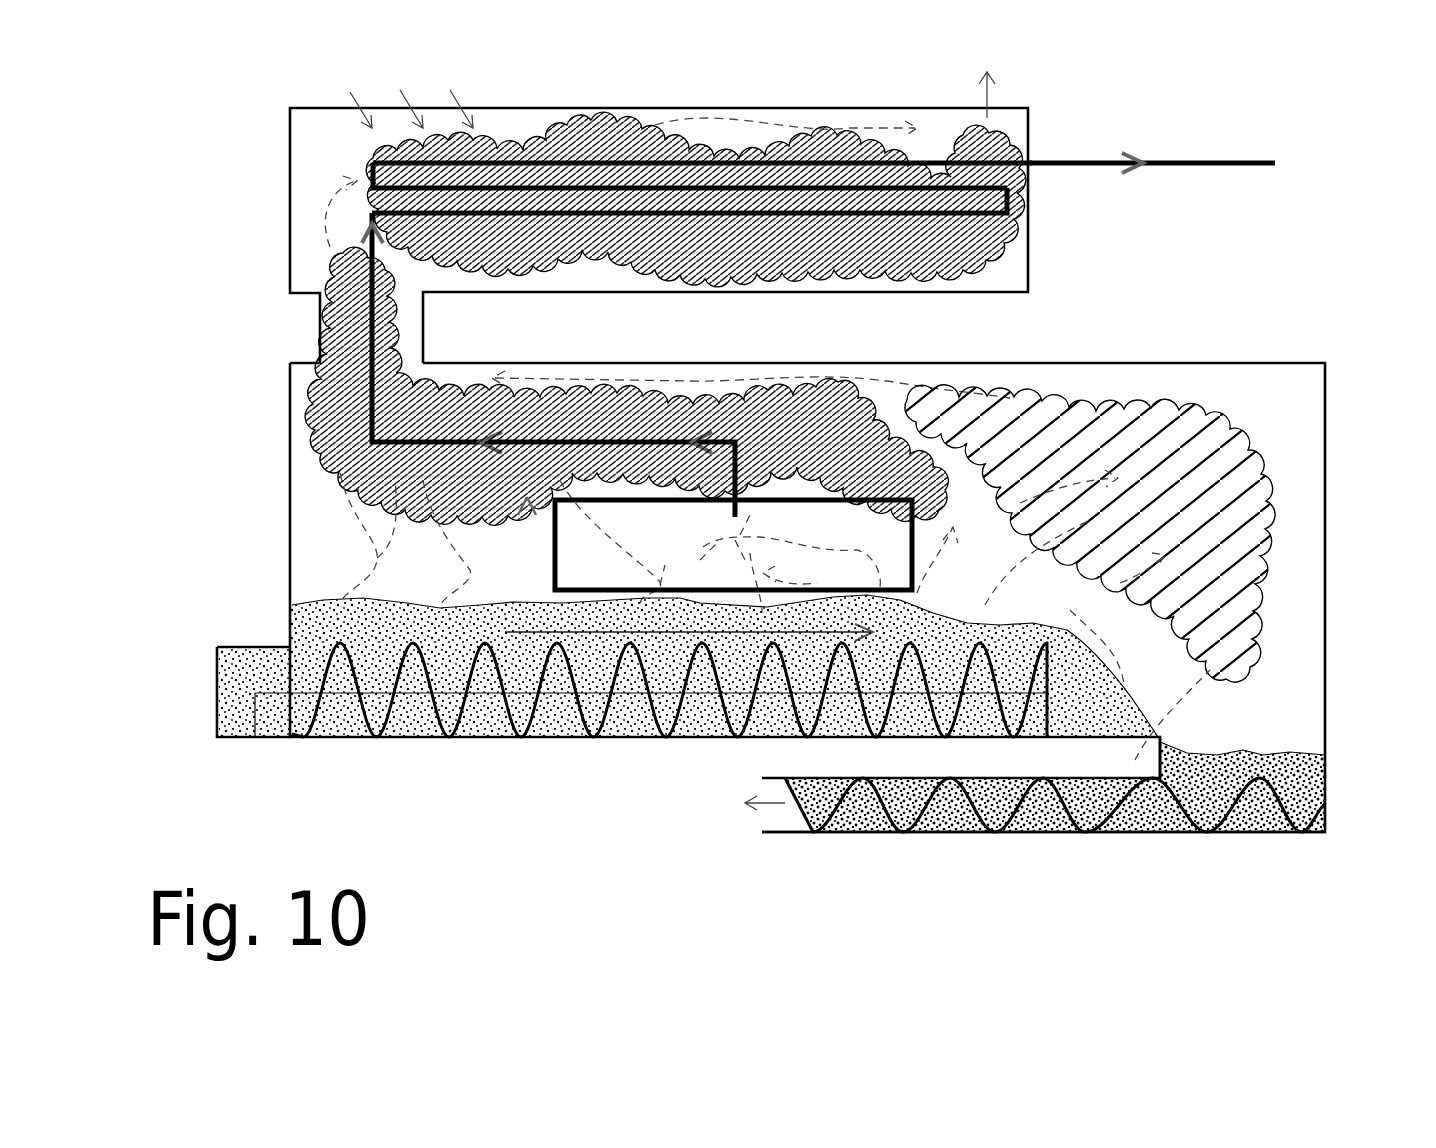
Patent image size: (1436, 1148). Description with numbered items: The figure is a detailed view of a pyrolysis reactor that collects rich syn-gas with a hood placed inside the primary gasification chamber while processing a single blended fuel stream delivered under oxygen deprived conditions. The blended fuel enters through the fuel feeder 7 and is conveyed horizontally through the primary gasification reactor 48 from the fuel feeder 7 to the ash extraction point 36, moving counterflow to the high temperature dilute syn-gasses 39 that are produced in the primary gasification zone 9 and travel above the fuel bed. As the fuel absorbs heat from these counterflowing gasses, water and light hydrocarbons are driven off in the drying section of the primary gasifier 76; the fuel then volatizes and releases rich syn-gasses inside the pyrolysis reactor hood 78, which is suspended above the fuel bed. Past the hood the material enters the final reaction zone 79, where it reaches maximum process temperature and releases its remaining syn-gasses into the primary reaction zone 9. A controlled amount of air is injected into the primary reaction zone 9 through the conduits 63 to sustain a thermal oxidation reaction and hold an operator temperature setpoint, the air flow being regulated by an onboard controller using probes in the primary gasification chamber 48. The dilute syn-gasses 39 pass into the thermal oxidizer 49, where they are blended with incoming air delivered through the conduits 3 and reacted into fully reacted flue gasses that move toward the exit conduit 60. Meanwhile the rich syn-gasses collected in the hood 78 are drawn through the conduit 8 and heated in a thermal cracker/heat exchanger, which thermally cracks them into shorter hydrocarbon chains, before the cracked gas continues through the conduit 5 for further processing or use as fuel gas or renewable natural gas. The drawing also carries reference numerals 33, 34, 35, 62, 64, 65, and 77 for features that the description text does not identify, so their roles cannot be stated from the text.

The conduits 3 is at (407, 83).
The conduit 5 is at (1212, 167).
The fuel feeder 7 is at (263, 754).
The conduit 8 is at (662, 504).
The primary gasification zone 9 is at (1262, 472).
The evaporator wick 33 is at (543, 735).
The condensate channel wick 34 is at (1073, 835).
The condensate outlet 35 is at (1327, 873).
The ash extraction point 36 is at (1257, 738).
The dilute syn-gasses 39 is at (593, 386).
The primary gasification reactor 48 is at (825, 605).
The thermal oxidizer 49 is at (290, 157).
The exit conduit 60 is at (987, 110).
The vapor region 62 is at (335, 475).
The conduits 63 is at (1157, 530).
The heated vapor region 64 is at (693, 150).
The flow path 65 is at (527, 497).
The drying section of the primary gasifier 76 is at (377, 558).
The heat pipe end 77 is at (990, 217).
The pyrolysis reactor hood 78 is at (757, 592).
The final reaction zone 79 is at (1167, 833).